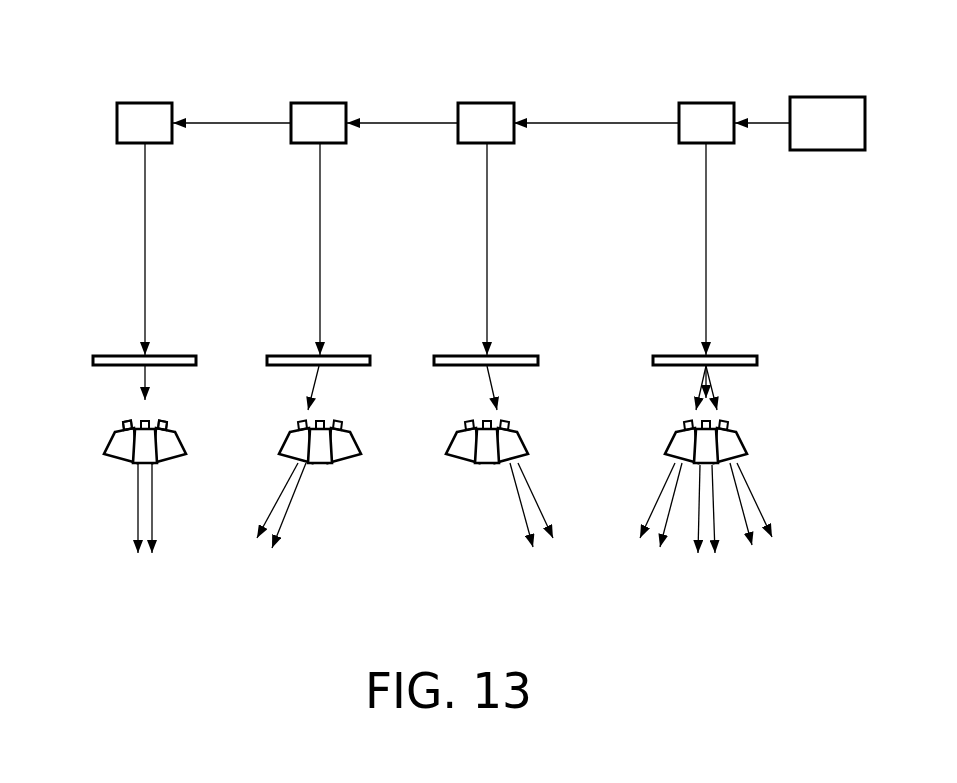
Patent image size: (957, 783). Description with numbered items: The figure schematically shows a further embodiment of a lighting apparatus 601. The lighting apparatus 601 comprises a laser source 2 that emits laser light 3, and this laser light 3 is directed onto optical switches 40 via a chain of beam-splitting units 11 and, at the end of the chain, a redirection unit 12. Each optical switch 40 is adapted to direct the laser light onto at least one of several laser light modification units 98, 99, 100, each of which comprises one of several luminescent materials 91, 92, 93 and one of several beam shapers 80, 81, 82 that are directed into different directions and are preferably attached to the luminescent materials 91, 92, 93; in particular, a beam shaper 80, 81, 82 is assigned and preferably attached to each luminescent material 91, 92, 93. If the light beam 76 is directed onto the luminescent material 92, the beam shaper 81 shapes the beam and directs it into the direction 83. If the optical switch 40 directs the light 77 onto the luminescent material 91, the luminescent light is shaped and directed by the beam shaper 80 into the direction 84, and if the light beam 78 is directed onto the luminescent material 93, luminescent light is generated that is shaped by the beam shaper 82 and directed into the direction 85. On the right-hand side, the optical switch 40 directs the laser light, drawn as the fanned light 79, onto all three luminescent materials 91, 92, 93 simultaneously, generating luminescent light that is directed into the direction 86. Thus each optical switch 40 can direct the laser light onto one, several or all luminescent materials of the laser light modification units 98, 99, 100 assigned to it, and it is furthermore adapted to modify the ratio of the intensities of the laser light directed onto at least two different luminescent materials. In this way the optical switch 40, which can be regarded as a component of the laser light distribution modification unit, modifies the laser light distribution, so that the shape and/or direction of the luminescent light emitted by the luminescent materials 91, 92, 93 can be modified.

The lighting apparatus 601 is at (607, 68).
The laser source 2 is at (830, 96).
The laser light 3 is at (765, 126).
The beam-splitting unit 11 is at (318, 102).
The redirection unit 12 is at (142, 102).
The optical switch 40 is at (95, 355).
The light beam 76 is at (148, 387).
The light 77 is at (318, 390).
The light beam 78 is at (492, 390).
The light beams 79 is at (735, 385).
The beam shaper 80 is at (105, 447).
The beam shaper 81 is at (135, 462).
The beam shaper 82 is at (183, 447).
The direction 83 is at (152, 568).
The direction 84 is at (262, 555).
The direction 85 is at (548, 555).
The direction 86 is at (708, 560).
The luminescent material 91 is at (124, 425).
The luminescent material 92 is at (141, 421).
The luminescent material 93 is at (165, 425).
The laser light modification unit 98 is at (110, 467).
The laser light modification unit 99 is at (158, 490).
The laser light modification unit 100 is at (178, 467).